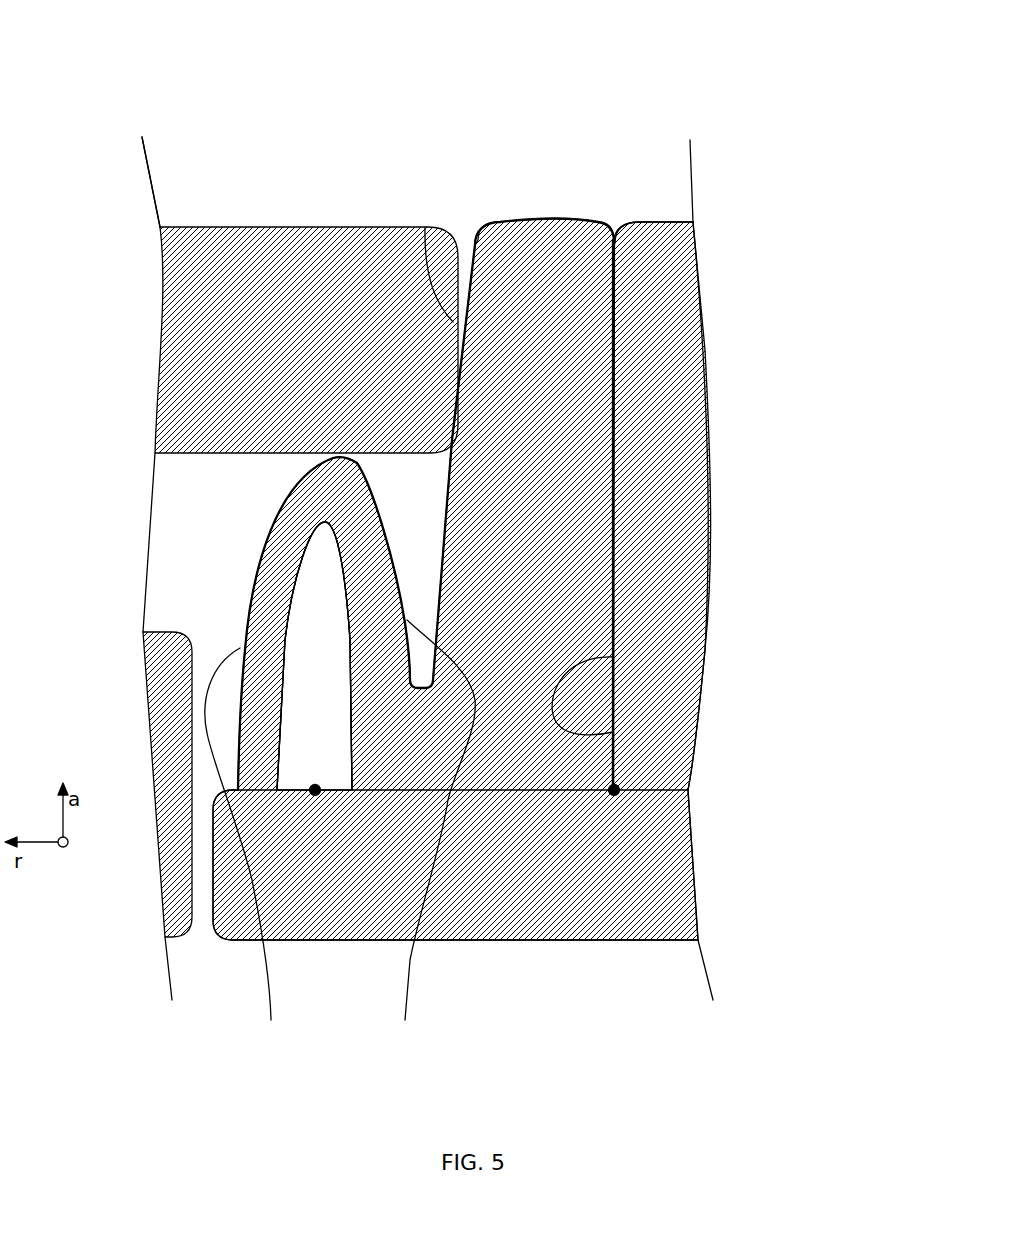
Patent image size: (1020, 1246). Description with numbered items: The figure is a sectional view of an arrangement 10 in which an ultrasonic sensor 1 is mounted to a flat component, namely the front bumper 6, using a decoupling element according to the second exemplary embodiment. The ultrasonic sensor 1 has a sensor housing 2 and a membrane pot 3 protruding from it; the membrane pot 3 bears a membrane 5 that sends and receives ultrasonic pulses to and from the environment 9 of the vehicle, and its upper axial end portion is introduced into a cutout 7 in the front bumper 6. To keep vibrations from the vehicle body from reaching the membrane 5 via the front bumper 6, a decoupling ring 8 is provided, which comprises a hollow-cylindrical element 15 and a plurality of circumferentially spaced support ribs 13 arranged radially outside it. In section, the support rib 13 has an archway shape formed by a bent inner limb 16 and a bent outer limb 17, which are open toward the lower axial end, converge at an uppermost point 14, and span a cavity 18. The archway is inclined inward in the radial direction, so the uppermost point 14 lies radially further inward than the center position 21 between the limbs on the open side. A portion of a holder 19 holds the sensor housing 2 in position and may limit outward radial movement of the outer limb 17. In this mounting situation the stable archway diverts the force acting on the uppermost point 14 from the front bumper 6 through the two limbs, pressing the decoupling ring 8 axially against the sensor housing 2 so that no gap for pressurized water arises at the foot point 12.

The ultrasonic sensor 1 is at (888, 555).
The sensor housing 2 is at (640, 790).
The membrane pot 3 is at (613, 657).
The membrane 5 is at (658, 222).
The front bumper 6 is at (228, 228).
The cutout 7 is at (425, 228).
The decoupling ring 8 is at (833, 530).
The environment 9 is at (290, 37).
The arrangement 10 is at (854, 110).
The foot point 12 is at (614, 790).
The support rib 13 is at (402, 577).
The uppermost point 14 is at (345, 455).
The hollow-cylindrical element 15 is at (613, 525).
The inner limb 16 is at (429, 836).
The outer limb 17 is at (244, 850).
The cavity 18 is at (302, 739).
The holder 19 is at (152, 631).
The center position 21 is at (315, 790).